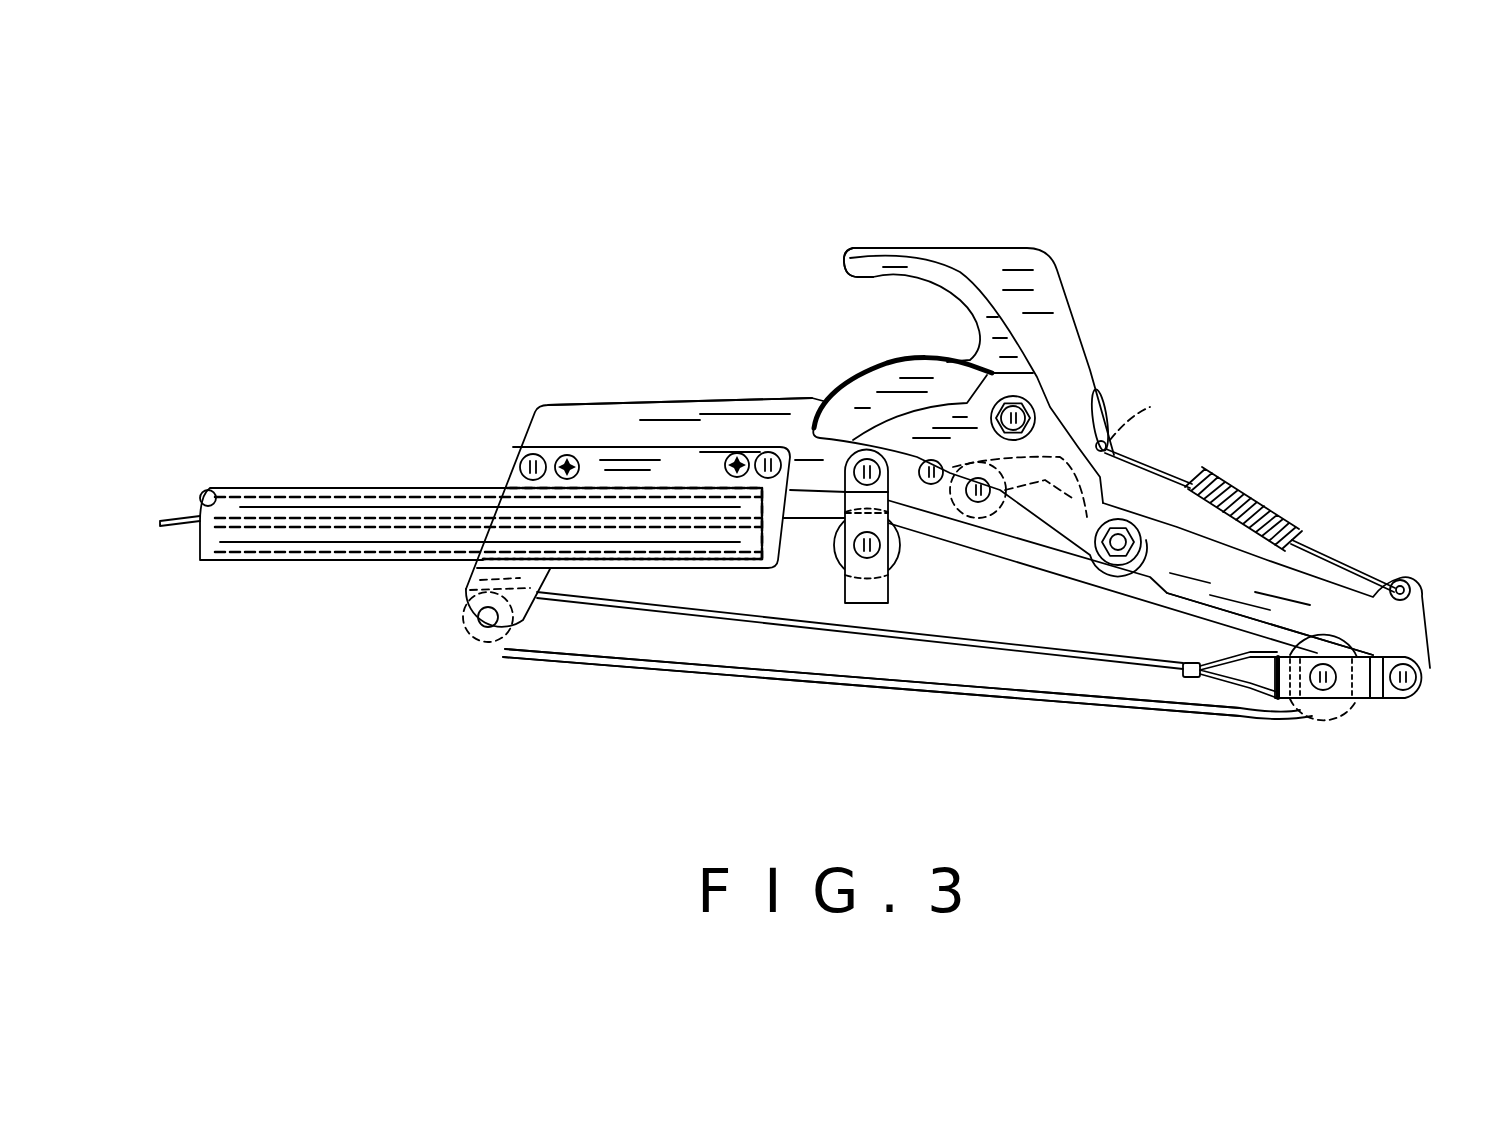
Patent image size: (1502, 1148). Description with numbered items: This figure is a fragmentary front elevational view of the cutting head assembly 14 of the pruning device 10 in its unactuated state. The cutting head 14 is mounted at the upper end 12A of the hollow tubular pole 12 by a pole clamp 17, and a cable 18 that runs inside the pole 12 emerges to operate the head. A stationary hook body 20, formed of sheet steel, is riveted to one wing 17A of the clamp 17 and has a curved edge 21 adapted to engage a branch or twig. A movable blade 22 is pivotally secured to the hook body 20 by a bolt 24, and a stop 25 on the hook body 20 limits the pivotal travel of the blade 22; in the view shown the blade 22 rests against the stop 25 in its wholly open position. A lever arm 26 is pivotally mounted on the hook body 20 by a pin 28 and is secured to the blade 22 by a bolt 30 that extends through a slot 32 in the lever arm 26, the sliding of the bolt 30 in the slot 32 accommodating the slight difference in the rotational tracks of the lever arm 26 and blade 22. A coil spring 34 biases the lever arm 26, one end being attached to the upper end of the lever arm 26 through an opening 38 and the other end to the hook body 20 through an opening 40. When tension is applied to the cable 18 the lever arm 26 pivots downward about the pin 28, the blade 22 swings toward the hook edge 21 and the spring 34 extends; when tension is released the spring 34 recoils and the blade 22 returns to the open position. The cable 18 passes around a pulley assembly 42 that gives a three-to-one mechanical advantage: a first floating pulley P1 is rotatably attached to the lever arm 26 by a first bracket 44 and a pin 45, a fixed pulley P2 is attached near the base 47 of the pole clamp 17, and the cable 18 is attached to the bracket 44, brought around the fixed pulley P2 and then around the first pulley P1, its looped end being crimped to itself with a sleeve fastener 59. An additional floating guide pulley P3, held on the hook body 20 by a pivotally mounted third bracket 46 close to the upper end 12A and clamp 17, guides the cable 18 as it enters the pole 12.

The pruning device 10 is at (1116, 228).
The pole 12 is at (335, 488).
The upper end of the pole 12A is at (632, 486).
The cutting head assembly 14 is at (1175, 348).
The pole clamp 17 is at (697, 560).
The wing of the clamp 17A is at (680, 467).
The cable 18 is at (1088, 712).
The hook body 20 is at (965, 248).
The curved edge 21 is at (878, 302).
The movable blade 22 is at (870, 362).
The bolt 24 is at (1040, 358).
The stop 25 is at (933, 487).
The lever arm 26 is at (1313, 570).
The pin 28 is at (977, 503).
The bolt 30 is at (1127, 522).
The slot 32 is at (1150, 415).
The coil spring 34 is at (1270, 498).
The opening 38 is at (1412, 590).
The opening 40 is at (1098, 392).
The pulley assembly 42 is at (720, 718).
The first bracket 44 is at (1370, 700).
The pin 45 is at (1415, 680).
The third bracket 46 is at (845, 600).
The base of the pole clamp 47 is at (522, 433).
The sleeve fastener 59 is at (1190, 680).
The first floating pulley P1 is at (1337, 712).
The fixed pulley P2 is at (460, 633).
The floating guide pulley P3 is at (836, 562).